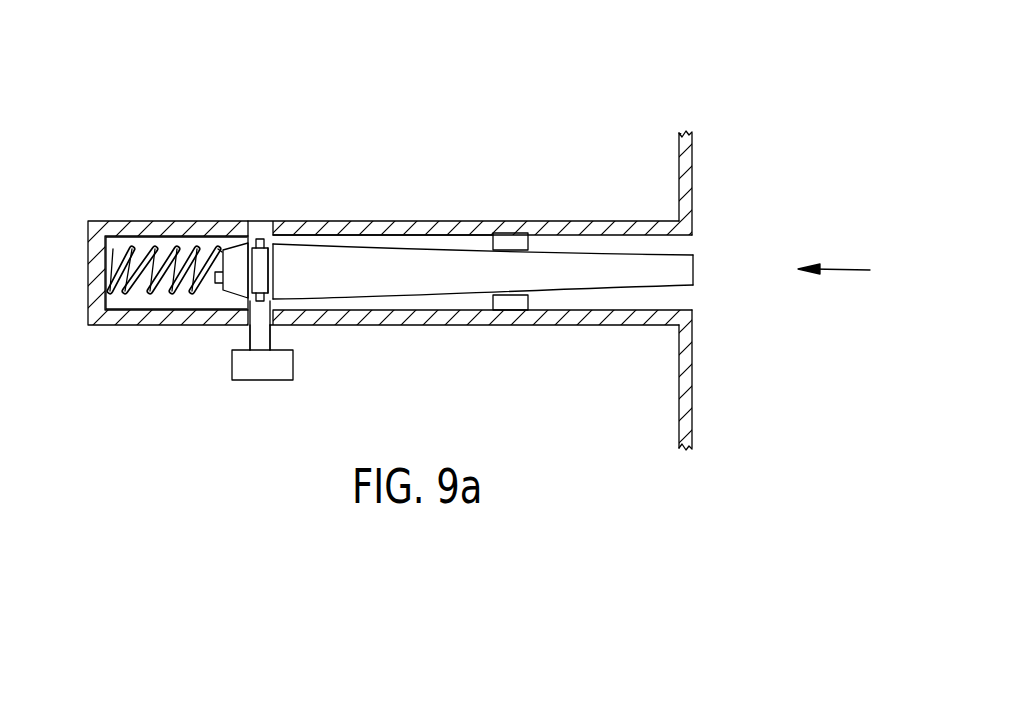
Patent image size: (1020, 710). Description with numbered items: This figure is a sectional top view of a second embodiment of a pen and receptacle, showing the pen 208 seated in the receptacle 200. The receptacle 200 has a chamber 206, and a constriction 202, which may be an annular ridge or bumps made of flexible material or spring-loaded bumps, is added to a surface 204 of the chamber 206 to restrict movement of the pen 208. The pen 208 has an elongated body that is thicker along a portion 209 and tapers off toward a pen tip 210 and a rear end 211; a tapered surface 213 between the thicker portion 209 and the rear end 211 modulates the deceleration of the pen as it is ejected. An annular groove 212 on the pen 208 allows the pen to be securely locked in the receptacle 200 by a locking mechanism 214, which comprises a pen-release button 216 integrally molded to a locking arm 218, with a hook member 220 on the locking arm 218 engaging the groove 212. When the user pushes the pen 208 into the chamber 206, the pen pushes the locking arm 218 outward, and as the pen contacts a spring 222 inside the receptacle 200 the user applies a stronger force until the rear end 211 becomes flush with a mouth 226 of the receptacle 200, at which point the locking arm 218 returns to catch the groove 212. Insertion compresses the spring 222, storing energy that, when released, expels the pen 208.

The receptacle 200 is at (461, 237).
The constriction 202 is at (525, 236).
The surface 204 is at (460, 232).
The chamber 206 is at (207, 240).
The pen 208 is at (451, 280).
The thicker portion 209 is at (289, 262).
The pen tip 210 is at (163, 292).
The rear end 211 is at (695, 272).
The annular groove 212 is at (264, 290).
The tapered surface 213 is at (335, 230).
The locking mechanism 214 is at (210, 376).
The pen-release button 216 is at (275, 380).
The locking arm 218 is at (255, 228).
The hook member 220 is at (252, 323).
The spring 222 is at (145, 255).
The mouth 226 is at (695, 243).